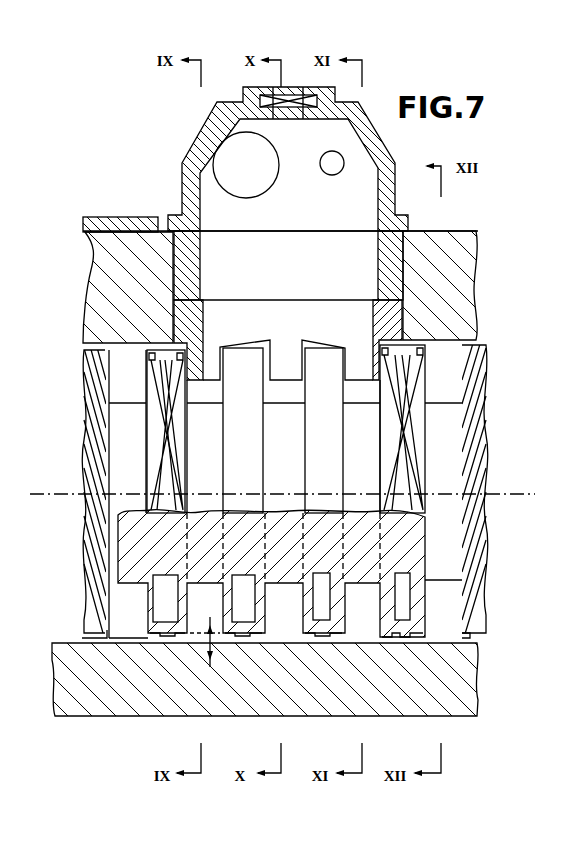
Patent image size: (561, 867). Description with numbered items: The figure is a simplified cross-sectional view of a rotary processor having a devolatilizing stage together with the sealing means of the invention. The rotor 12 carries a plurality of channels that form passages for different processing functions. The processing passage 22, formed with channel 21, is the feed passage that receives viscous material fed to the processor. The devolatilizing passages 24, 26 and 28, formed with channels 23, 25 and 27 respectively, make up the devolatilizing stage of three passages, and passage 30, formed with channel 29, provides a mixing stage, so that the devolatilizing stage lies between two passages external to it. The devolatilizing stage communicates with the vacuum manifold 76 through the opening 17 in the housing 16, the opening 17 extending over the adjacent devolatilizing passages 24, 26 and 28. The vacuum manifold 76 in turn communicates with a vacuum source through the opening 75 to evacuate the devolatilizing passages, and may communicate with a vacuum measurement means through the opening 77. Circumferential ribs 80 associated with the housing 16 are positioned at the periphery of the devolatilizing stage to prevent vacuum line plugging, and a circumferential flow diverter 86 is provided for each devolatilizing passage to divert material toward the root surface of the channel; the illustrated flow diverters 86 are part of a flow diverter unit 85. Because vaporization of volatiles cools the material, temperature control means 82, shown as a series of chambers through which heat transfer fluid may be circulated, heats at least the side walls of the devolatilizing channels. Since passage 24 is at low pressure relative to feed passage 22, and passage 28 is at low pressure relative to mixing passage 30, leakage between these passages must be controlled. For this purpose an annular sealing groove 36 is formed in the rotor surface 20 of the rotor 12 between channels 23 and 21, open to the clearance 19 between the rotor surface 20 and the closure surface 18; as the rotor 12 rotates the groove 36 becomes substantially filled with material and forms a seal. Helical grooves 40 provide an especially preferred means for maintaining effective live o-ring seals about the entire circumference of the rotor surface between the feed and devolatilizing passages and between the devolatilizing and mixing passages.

The rotor 12 is at (102, 465).
The housing 16 is at (102, 710).
The opening 17 is at (200, 262).
The closure surface 18 is at (266, 640).
The clearance 19 is at (204, 627).
The rotor surface 20 is at (240, 638).
The channel 21 is at (128, 385).
The processing passage 22 is at (113, 612).
The channel 23 is at (208, 392).
The devolatilizing passage 24 is at (197, 612).
The channel 25 is at (287, 392).
The devolatilizing passage 26 is at (290, 628).
The channel 27 is at (365, 392).
The devolatilizing passage 28 is at (360, 625).
The channel 29 is at (438, 392).
The passage 30 is at (442, 625).
The annular sealing groove 36 is at (167, 484).
The helical grooves 40 is at (412, 357).
The opening 75 is at (282, 158).
The vacuum manifold 76 is at (390, 205).
The opening 77 is at (320, 171).
The circumferential ribs 80 is at (203, 318).
The temperature control means 82 is at (320, 617).
The flow diverter unit 85 is at (292, 315).
The circumferential flow diverter 86 is at (213, 358).